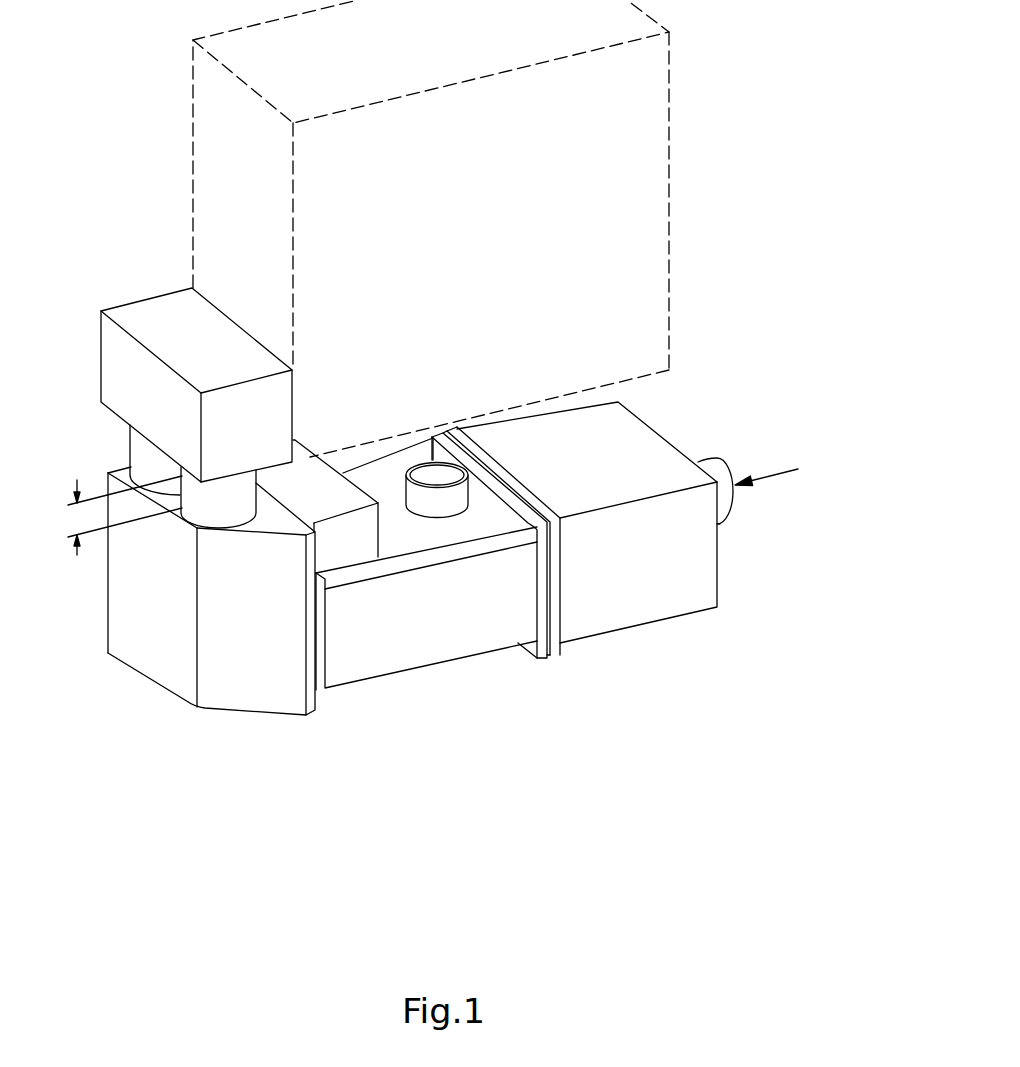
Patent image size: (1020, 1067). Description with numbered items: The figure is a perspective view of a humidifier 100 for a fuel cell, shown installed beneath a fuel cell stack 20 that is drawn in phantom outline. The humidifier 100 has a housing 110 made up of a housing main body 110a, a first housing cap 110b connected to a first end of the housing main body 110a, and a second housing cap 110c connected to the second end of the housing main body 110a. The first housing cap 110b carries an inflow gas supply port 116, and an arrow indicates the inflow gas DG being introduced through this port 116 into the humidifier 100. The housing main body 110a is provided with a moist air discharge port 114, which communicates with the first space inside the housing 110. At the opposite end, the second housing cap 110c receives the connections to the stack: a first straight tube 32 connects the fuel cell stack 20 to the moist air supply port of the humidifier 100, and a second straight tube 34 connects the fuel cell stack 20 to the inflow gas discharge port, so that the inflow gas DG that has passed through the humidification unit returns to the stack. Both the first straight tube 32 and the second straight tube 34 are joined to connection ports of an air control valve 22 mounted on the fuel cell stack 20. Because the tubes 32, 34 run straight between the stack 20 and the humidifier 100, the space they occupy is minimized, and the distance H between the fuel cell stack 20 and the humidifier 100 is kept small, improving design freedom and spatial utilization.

The fuel cell stack 20 is at (669, 201).
The air control valve 22 is at (130, 368).
The second straight tube 34 is at (140, 450).
The first straight tube 32 is at (222, 505).
The distance H is at (118, 515).
The humidifier 100 is at (467, 592).
The housing 110 is at (412, 608).
The housing main body 110a is at (447, 643).
The first housing cap 110b is at (587, 556).
The second housing cap 110c is at (262, 692).
The moist air discharge port 114 is at (582, 512).
The inflow gas supply port 116 is at (737, 509).
The inflow gas DG is at (764, 477).